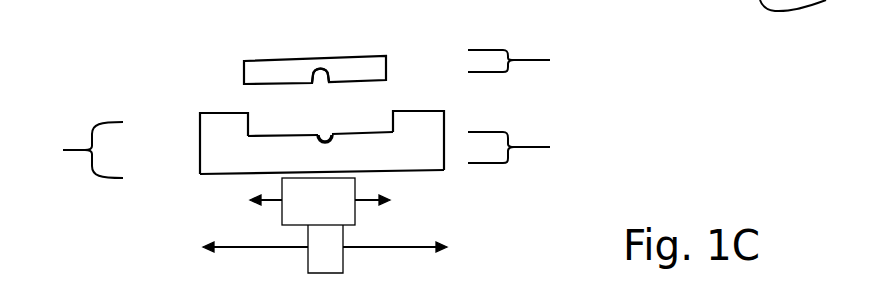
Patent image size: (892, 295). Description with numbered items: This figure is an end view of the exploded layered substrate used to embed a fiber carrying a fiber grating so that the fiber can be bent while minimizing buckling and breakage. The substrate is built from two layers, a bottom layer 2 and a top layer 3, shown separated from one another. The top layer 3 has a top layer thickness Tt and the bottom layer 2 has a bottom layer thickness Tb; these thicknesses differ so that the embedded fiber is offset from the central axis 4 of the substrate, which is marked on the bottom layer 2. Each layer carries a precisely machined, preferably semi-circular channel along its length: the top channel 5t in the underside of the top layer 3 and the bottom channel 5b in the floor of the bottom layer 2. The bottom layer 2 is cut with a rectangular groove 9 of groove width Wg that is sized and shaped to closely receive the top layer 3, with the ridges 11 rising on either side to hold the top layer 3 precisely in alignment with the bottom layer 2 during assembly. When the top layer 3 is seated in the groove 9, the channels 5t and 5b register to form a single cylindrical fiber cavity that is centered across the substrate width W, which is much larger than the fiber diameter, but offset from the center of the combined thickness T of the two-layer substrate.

The bottom layer 2 is at (215, 143).
The top layer 3 is at (363, 72).
The central axis 4 is at (333, 153).
The top channel 5t is at (318, 85).
The bottom channel 5b is at (331, 132).
The rectangular groove 9 is at (262, 132).
The ridges 11 is at (423, 130).
The combined thickness T is at (79, 150).
The top layer thickness Tt is at (528, 54).
The bottom layer thickness Tb is at (538, 146).
The groove width Wg is at (320, 201).
The substrate width W is at (325, 249).